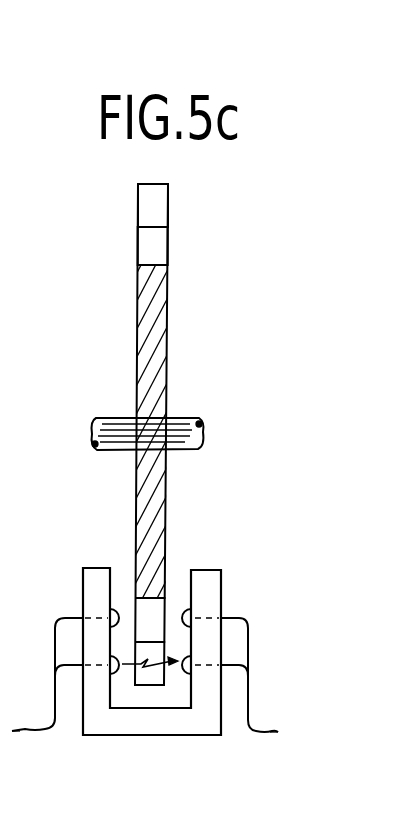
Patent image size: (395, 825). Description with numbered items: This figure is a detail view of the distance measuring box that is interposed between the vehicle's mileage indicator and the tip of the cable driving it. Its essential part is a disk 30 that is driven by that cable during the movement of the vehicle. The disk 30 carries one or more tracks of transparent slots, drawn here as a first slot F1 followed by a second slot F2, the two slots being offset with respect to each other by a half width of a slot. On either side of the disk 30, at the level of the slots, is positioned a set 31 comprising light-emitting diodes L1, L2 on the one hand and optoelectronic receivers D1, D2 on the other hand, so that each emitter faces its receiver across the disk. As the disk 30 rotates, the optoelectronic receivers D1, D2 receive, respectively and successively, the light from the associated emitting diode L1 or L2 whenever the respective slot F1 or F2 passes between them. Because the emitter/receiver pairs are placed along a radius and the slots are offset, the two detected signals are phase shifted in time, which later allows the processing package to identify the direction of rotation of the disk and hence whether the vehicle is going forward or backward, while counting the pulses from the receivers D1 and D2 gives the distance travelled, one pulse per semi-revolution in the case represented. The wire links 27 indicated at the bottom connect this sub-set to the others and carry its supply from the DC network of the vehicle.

The disk 30 is at (155, 327).
The set of light-emitting diodes and optoelectronic receivers 31 is at (97, 576).
The first slot F1 is at (158, 206).
The second slot F2 is at (160, 248).
The light-emitting diode L1 is at (65, 660).
The light-emitting diode L2 is at (70, 662).
The optoelectronic receiver D1 is at (230, 661).
The optoelectronic receiver D2 is at (229, 662).
The wire links 27 is at (144, 747).